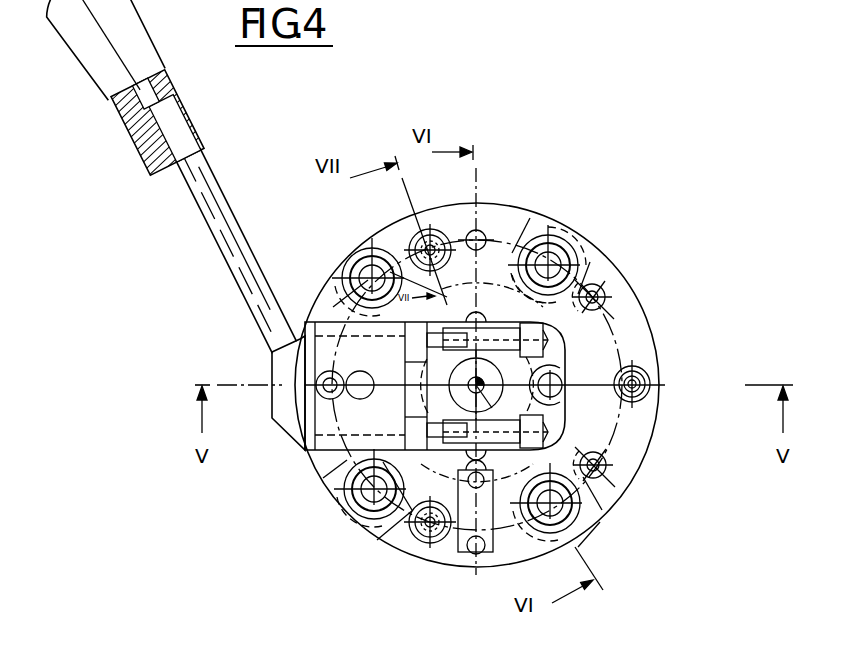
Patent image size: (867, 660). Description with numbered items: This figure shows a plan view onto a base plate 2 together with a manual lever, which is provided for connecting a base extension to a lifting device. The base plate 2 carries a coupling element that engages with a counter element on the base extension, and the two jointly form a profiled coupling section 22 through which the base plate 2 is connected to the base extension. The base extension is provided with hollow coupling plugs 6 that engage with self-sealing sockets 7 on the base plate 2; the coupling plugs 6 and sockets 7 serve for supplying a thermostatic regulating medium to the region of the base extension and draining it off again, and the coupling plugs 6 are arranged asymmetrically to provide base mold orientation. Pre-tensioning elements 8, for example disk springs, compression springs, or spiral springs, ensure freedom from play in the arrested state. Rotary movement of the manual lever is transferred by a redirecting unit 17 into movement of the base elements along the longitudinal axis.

The base plate 2 is at (637, 455).
The coupling plugs 6 is at (560, 250).
The sockets 7 is at (590, 253).
The pre-tensioning elements 8 is at (656, 372).
The redirecting unit 17 is at (360, 420).
The profiled coupling section 22 is at (512, 372).